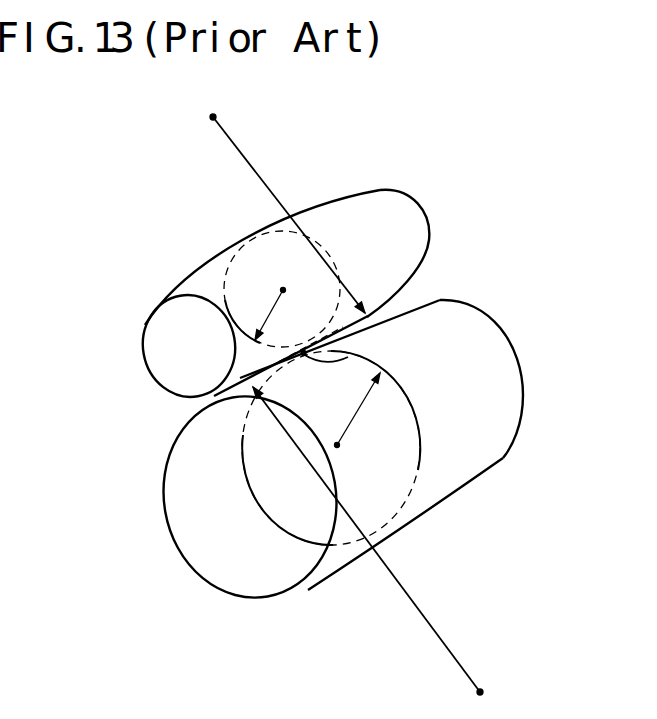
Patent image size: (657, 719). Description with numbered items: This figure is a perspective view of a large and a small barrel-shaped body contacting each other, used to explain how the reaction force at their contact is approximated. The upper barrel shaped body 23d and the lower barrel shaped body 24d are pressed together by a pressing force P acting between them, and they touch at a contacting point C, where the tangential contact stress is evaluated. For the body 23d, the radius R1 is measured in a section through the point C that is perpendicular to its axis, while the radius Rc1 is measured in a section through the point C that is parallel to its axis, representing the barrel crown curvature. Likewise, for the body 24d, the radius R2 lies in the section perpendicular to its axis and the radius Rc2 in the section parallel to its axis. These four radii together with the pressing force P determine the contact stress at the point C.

The barrel shaped body 23d is at (371, 200).
The barrel shaped body 24d is at (493, 440).
The radius of barrel shaped body 23d in section parallel to axis Rc1 is at (265, 183).
The radius of barrel shaped body 24d in section parallel to axis Rc2 is at (404, 590).
The radius of barrel shaped body 23d in section vertical to axis R1 is at (282, 289).
The radius of barrel shaped body 24d in section vertical to axis R2 is at (331, 448).
The pressing force P is at (303, 352).
The contacting point C is at (338, 355).